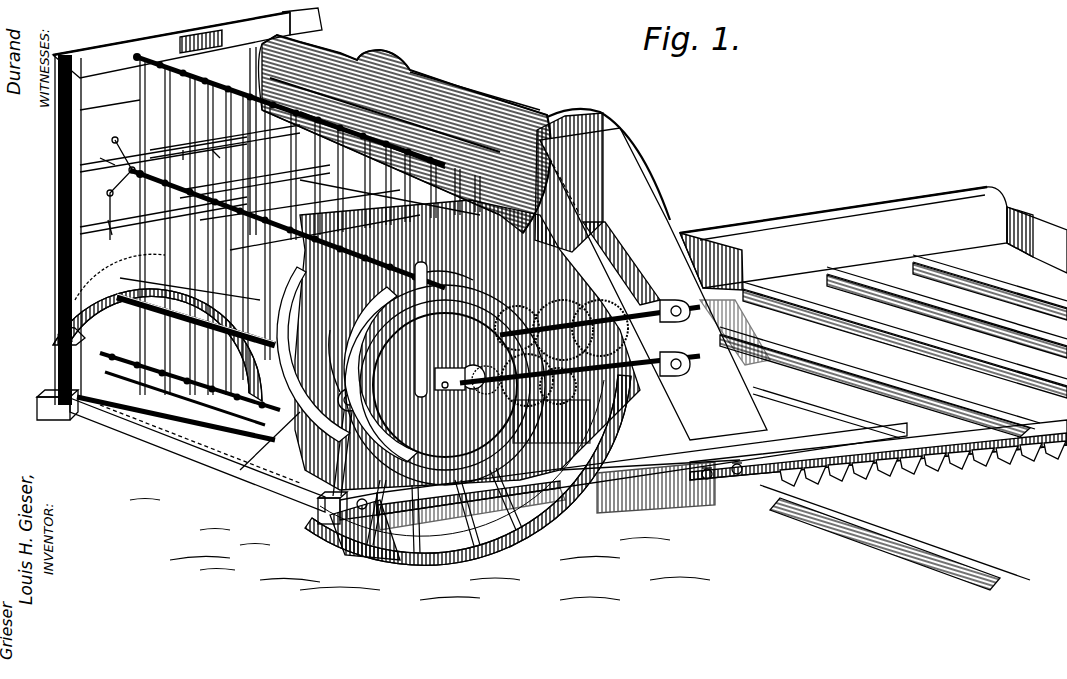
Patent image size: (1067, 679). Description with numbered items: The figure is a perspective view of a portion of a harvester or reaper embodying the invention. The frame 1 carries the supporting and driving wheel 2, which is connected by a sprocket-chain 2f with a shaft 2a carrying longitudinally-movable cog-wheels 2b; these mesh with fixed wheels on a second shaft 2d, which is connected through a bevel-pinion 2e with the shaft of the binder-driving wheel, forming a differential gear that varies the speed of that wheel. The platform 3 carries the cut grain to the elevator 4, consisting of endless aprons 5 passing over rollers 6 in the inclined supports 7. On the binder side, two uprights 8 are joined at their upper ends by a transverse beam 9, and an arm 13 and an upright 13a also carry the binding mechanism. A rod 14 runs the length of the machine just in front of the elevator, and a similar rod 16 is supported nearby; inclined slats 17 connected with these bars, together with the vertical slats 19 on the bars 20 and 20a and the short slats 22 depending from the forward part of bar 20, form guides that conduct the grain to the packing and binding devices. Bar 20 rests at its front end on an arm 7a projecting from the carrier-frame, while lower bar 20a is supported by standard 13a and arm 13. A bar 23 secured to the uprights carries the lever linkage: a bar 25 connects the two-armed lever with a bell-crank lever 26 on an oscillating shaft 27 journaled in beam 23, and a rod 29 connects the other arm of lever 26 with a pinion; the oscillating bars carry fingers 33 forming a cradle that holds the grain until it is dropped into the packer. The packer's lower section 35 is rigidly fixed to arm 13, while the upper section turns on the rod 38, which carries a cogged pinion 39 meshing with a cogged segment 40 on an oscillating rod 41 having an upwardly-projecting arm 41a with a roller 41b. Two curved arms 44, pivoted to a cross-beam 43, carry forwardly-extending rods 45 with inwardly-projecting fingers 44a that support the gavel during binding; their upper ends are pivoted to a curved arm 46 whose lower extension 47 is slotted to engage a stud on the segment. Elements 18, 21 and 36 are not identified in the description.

The frame 1 is at (185, 462).
The supporting and driving wheel 2 is at (878, 453).
The shaft 2a is at (677, 305).
The longitudinally-movable cog-wheels 2b is at (576, 414).
The shaft 2d is at (677, 371).
The bevel-pinion 2e is at (580, 388).
The sprocket-chain 2f is at (590, 315).
The platform 3 is at (873, 388).
The elevator 4 is at (548, 116).
The endless aprons 5 is at (468, 470).
The rollers 6 is at (467, 397).
The inclined supports 7 is at (523, 301).
The arm 7a is at (447, 173).
The uprights or standards 8 is at (252, 62).
The transverse beam or bar 9 is at (187, 43).
The arm 13 is at (270, 441).
The upright or standard 13a is at (118, 362).
The rod or bar 14 is at (330, 140).
The rod or bar 16 is at (240, 312).
The inclined slats or bars 17 is at (400, 176).
The bar 18 is at (382, 436).
The vertical slats 19 is at (140, 107).
The bar 20 is at (289, 109).
The lower bar 20a is at (180, 392).
The pin 21 is at (183, 150).
The short slats 22 is at (368, 165).
The bar or beam 23 is at (99, 154).
The bar 25 is at (121, 182).
The bell-crank lever 26 is at (140, 178).
The oscillating shaft 27 is at (160, 200).
The rod 29 is at (110, 216).
The slats or fingers 33 is at (499, 297).
The lower section 35 is at (212, 150).
The bracket 36 is at (474, 168).
The rod 38 is at (160, 324).
The cogged pinion 39 is at (72, 288).
The cogged segment 40 is at (62, 345).
The oscillating rod 41 is at (210, 440).
The upwardly-projecting arm 41a is at (320, 508).
The roller 41b is at (300, 470).
The cross-beam 43 is at (88, 240).
The curved arms 44 is at (125, 278).
The inwardly-projecting slats or fingers 44a is at (144, 409).
The forwardly-extending rods 45 is at (234, 405).
The curved arm 46 is at (82, 262).
The extension 47 is at (58, 335).